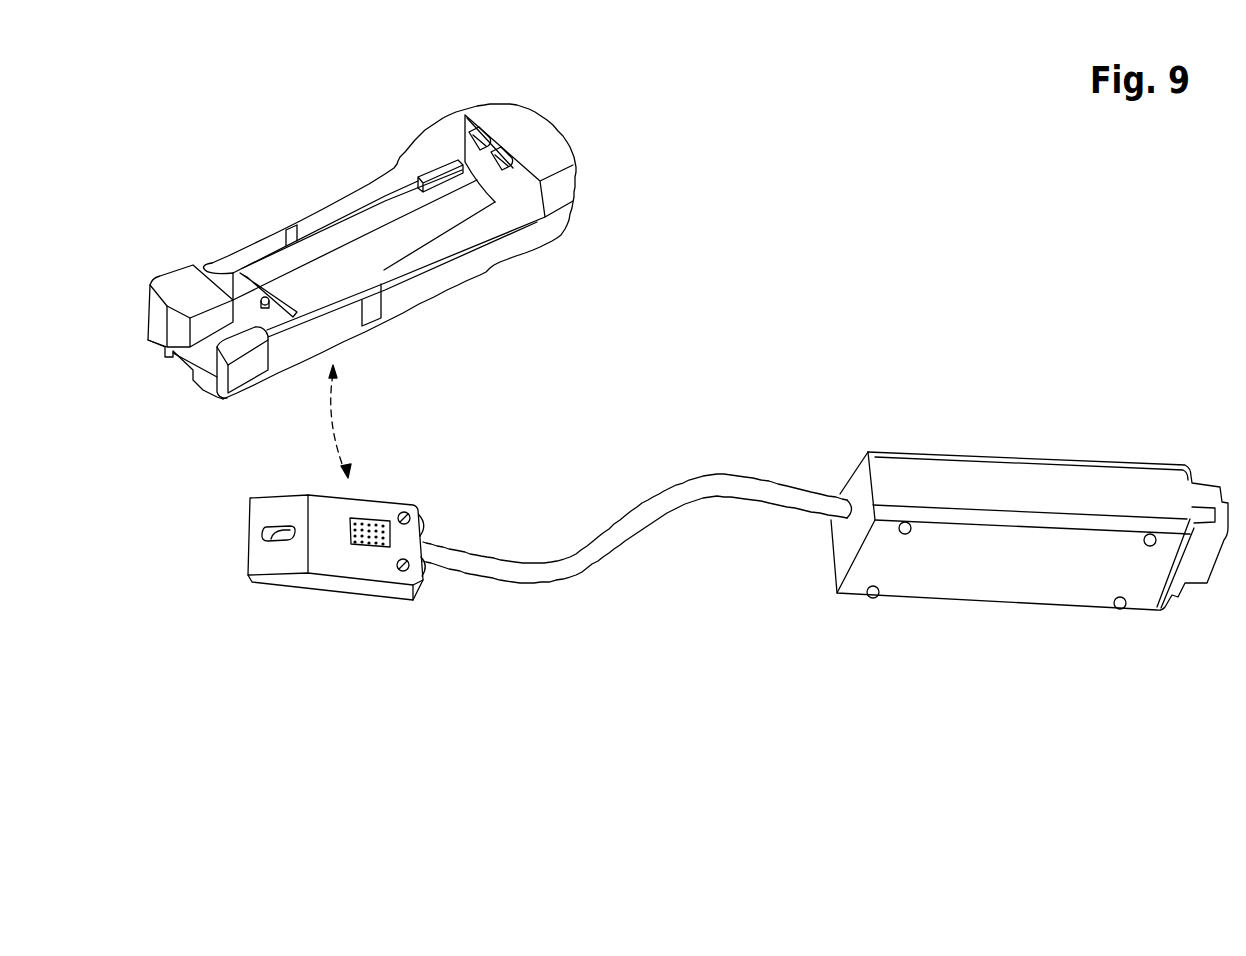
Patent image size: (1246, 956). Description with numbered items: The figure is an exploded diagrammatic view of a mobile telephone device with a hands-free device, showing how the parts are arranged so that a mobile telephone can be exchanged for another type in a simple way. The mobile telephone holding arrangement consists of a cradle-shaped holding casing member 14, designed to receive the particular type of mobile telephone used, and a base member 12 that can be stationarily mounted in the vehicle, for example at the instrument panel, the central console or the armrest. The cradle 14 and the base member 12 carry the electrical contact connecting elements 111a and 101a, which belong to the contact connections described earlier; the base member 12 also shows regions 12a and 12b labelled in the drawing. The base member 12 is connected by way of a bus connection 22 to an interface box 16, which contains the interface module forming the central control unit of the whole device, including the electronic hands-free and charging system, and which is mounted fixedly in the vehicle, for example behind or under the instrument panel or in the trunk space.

The holding casing member 14 is at (347, 158).
The latching clips 111a is at (490, 137).
The base member 12 is at (275, 581).
The contact field 101a is at (377, 521).
The cable outlet upper 12a is at (426, 523).
The cable outlet lower 12b is at (426, 573).
The bus connection 22 is at (637, 517).
The interface box 16 is at (1012, 572).